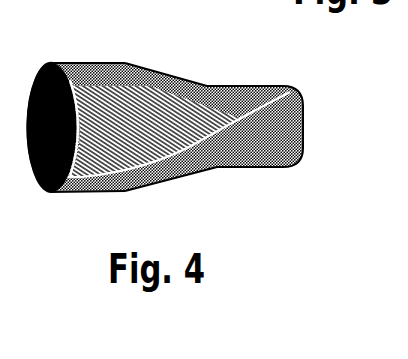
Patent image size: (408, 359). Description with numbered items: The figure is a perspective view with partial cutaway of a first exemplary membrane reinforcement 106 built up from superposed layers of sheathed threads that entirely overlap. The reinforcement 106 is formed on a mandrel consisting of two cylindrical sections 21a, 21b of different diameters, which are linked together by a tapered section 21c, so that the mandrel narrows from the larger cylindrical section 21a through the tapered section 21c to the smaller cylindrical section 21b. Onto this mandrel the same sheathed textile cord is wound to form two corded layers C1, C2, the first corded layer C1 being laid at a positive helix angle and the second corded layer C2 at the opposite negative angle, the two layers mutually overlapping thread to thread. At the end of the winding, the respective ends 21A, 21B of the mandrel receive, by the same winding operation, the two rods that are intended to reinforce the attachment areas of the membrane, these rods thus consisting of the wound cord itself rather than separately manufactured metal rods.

The membrane reinforcement 106 is at (84, 197).
The end of the mandrel 21A is at (62, 62).
The cylindrical section 21a is at (100, 61).
The tapered section 21c is at (181, 77).
The cylindrical section 21b is at (255, 84).
The corded layer C1 is at (280, 84).
The end of the mandrel 21B is at (305, 146).
The corded layer C2 is at (267, 162).